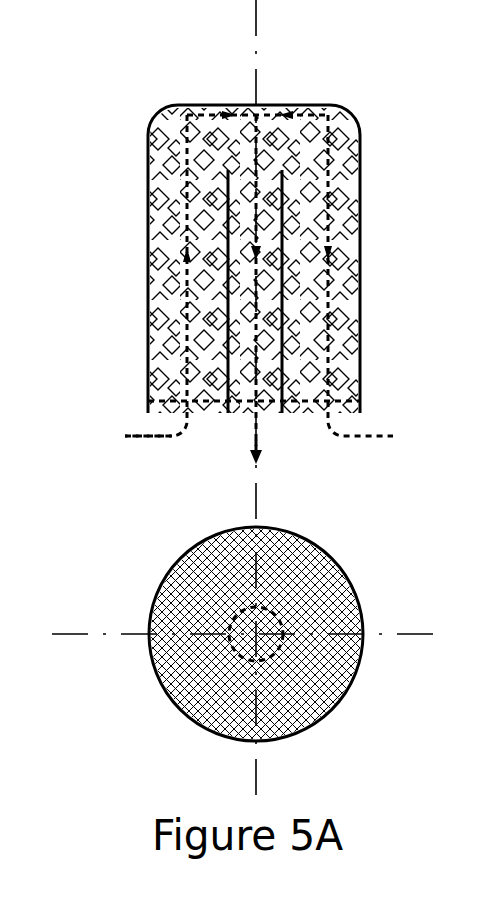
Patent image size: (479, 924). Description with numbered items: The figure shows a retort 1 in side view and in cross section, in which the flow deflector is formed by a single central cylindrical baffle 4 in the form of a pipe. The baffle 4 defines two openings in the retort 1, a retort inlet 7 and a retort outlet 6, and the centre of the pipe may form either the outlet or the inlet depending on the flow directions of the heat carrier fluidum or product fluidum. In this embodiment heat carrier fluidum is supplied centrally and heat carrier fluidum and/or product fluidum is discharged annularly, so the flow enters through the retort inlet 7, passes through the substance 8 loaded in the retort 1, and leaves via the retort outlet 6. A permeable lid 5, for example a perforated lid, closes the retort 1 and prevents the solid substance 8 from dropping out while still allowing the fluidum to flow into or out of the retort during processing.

The retort 1 is at (146, 122).
The baffle 4 is at (286, 212).
The permeable lid 5 is at (345, 394).
The retort outlet 6 is at (268, 418).
The retort inlet 7 is at (174, 420).
The substance 8 is at (338, 252).